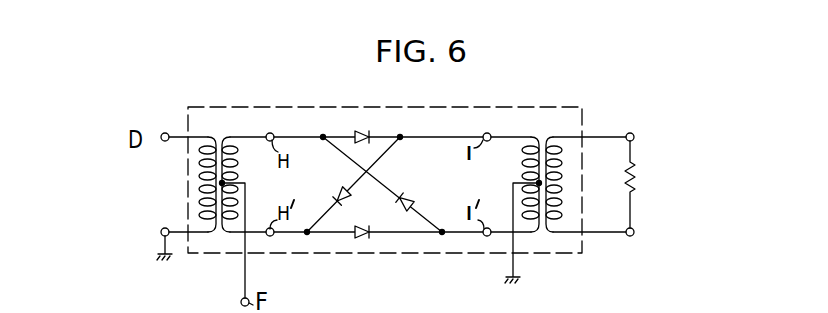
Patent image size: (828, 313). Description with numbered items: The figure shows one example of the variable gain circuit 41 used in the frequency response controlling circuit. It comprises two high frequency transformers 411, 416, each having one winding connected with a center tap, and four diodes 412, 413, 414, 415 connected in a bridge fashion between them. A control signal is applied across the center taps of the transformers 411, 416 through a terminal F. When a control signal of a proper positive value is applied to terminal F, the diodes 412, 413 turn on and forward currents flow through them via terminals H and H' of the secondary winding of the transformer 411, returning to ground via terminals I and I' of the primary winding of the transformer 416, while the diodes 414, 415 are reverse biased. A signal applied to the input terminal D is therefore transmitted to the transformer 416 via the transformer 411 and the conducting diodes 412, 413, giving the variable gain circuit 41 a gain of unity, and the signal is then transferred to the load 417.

The variable gain circuit 41 is at (482, 254).
The high frequency transformer 411 is at (218, 133).
The diode 412 is at (364, 128).
The diode 413 is at (363, 236).
The diode 414 is at (340, 189).
The diode 415 is at (408, 197).
The high frequency transformer 416 is at (543, 133).
The load 417 is at (633, 165).